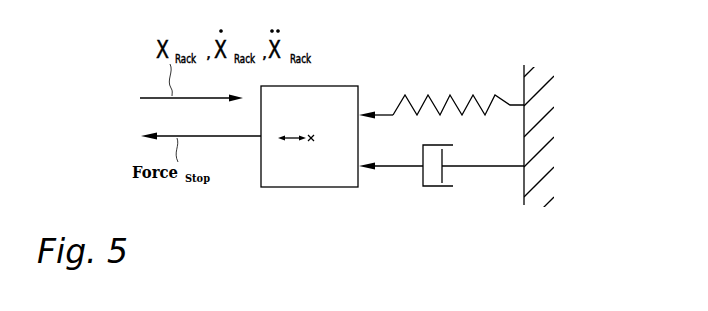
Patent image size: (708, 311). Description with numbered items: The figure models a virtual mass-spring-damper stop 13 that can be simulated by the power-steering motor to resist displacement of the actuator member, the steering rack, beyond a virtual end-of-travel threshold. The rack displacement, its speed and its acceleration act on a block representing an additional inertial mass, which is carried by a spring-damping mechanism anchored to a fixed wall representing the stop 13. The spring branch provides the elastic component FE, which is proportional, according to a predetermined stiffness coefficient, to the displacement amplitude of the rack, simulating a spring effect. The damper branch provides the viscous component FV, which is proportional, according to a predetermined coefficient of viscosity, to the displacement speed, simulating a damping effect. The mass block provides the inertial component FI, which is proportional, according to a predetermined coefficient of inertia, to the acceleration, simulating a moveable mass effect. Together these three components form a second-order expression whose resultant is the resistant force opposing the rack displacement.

The virtual mass-spring-damper stop 13 is at (570, 124).
The elastic component FE is at (383, 113).
The viscous component FV is at (383, 170).
The inertial component FI is at (298, 142).